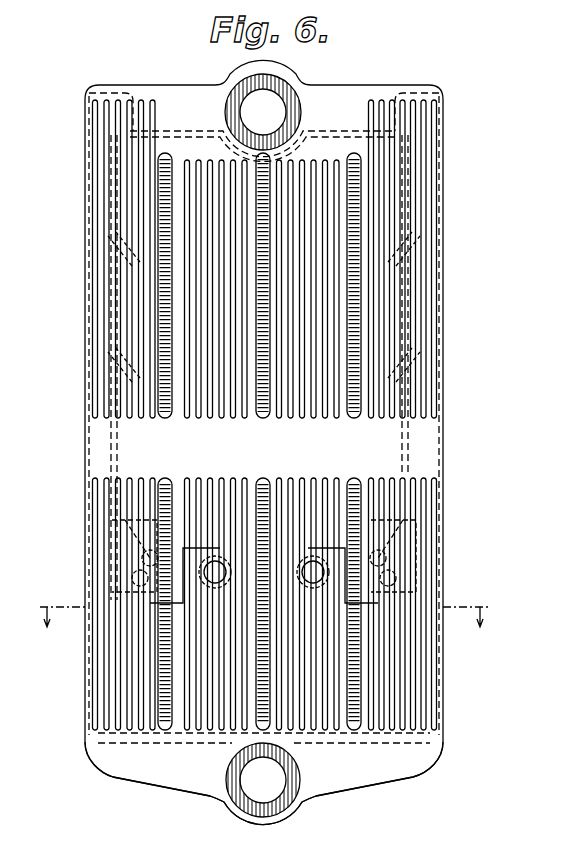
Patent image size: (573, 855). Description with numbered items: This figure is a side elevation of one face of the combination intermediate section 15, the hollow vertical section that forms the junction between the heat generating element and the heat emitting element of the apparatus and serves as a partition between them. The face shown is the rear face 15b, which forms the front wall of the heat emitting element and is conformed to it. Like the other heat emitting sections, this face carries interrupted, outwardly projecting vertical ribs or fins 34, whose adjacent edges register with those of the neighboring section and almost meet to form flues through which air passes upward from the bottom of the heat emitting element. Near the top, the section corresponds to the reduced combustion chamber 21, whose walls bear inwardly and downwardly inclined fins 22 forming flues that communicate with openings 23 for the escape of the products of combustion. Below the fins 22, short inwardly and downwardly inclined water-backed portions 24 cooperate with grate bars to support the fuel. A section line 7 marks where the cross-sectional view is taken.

The combination intermediate section 15 is at (235, 442).
The rear face of the combination section 15b is at (435, 449).
The combustion chamber 21 is at (326, 148).
The fins 22 is at (412, 236).
The openings 23 is at (171, 110).
The water-backed portions 24 is at (142, 552).
The vertical ribs or fins 34 is at (207, 475).
The section line 7- 7 is at (263, 621).